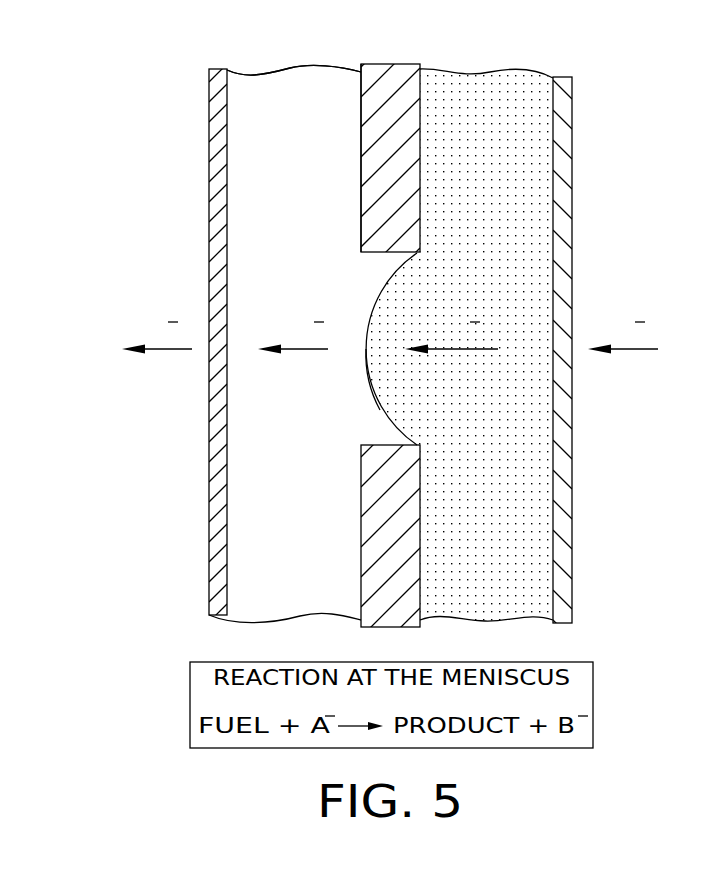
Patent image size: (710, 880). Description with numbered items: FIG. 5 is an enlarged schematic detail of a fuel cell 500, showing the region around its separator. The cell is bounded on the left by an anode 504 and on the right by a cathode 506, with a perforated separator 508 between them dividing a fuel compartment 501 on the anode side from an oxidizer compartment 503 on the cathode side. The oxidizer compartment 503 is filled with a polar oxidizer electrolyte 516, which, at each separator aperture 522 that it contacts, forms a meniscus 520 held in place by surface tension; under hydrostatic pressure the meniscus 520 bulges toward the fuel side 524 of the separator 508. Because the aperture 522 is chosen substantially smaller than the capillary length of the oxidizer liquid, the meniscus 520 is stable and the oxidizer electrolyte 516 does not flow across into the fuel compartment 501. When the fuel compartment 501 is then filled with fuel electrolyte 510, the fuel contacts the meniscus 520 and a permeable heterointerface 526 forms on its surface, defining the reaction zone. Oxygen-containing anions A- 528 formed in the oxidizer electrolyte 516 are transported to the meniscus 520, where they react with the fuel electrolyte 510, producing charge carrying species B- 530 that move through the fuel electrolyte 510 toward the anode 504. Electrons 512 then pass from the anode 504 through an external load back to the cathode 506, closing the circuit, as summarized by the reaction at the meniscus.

The fuel cell 500 is at (150, 524).
The fuel compartment 501 is at (309, 583).
The oxidizer compartment 503 is at (513, 583).
The anode 504 is at (209, 157).
The cathode 506 is at (573, 150).
The separator 508 is at (348, 156).
The fuel electrolyte 510 is at (296, 96).
The electrons 512 is at (167, 349).
The oxidizer electrolyte 516 is at (502, 95).
The meniscus 520 is at (362, 297).
The separator aperture 522 is at (387, 445).
The fuel side 524 is at (361, 203).
The heterointerface 526 is at (367, 380).
The anion A- 528 is at (455, 349).
The charge carrying species B- 530 is at (310, 349).